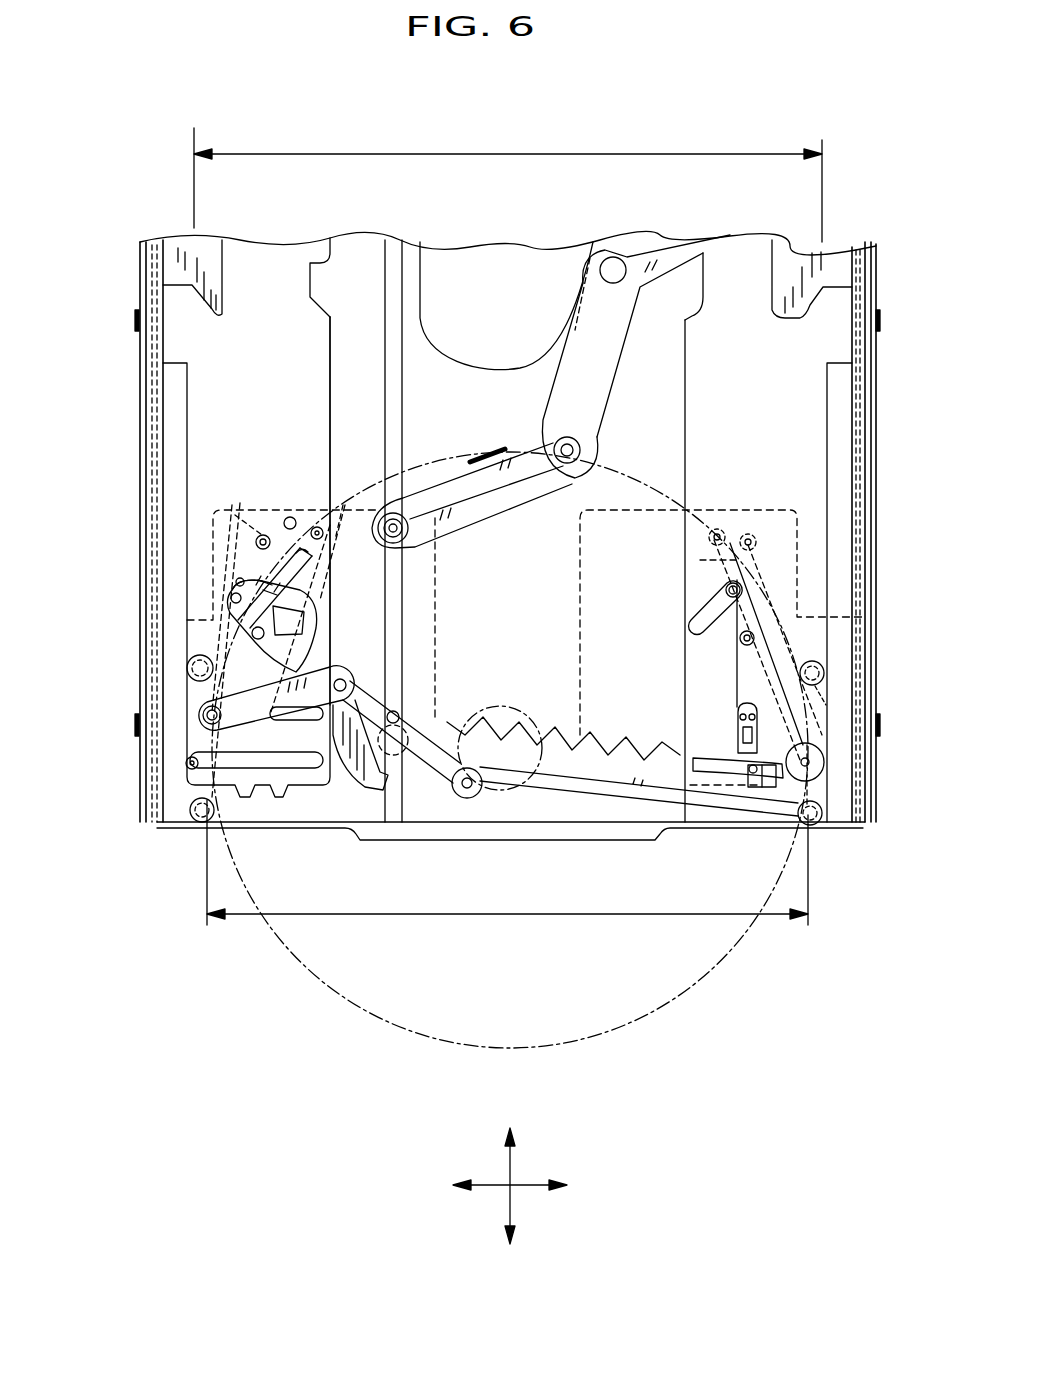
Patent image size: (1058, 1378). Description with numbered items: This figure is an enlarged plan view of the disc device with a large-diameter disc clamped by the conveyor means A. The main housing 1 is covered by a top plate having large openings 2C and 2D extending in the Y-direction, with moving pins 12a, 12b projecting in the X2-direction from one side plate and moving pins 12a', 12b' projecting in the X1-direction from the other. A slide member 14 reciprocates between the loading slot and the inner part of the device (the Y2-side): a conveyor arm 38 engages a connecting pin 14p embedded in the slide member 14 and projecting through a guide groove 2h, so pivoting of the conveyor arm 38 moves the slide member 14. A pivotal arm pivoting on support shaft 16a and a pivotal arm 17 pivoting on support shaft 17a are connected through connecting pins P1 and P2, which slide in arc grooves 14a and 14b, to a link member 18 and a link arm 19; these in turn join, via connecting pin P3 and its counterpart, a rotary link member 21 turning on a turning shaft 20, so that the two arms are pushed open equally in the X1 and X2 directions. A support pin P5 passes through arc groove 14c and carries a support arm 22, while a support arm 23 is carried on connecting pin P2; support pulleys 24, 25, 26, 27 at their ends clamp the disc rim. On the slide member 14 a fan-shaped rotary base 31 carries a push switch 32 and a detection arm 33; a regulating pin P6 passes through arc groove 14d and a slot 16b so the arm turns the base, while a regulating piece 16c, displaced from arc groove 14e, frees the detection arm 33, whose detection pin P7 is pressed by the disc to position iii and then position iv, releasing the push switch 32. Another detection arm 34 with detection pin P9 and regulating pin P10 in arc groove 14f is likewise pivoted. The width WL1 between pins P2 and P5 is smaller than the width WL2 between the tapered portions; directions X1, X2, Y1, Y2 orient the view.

The main housing 1 is at (140, 466).
The opening 2C is at (330, 420).
The opening 2D is at (687, 437).
The guide groove 2h is at (402, 403).
The moving pin 12a is at (913, 730).
The moving pin 12a' is at (89, 730).
The moving pin 12b is at (917, 323).
The moving pin 12b' is at (100, 323).
The slide member 14 is at (580, 578).
The arc groove 14a is at (270, 722).
The arc groove 14b is at (720, 762).
The arc groove 14c is at (300, 768).
The arc groove 14d is at (245, 553).
The arc groove 14e is at (318, 636).
The arc groove 14f is at (697, 642).
The connecting pin 14p is at (400, 505).
The support shaft 16a is at (262, 530).
The slot 16b is at (232, 513).
The regulating piece 16c is at (302, 588).
The pivotal arm 17 is at (745, 582).
The support shaft 17a is at (762, 530).
The link member 18 is at (310, 698).
The link arm 19 is at (600, 782).
The turning shaft 20 is at (425, 702).
The rotary link member 21 is at (417, 765).
The support arm 22 is at (207, 711).
The support arm 23 is at (826, 697).
The support pulley 24 is at (205, 822).
The support pulley 25 is at (190, 662).
The support pulley 26 is at (815, 830).
The support pulley 27 is at (826, 668).
The rotary base 31 is at (300, 652).
The push switch 32 is at (323, 617).
The detection arm 33 is at (312, 556).
The detection arm 34 is at (705, 573).
The conveyor arm 38 is at (598, 422).
The connecting pin P1 is at (208, 714).
The connecting pin P2 is at (826, 762).
The connecting pin P3 is at (400, 703).
The support pin P5 is at (188, 762).
The regulating pin P6 is at (232, 592).
The detection pin P7 is at (298, 530).
The detection pin P9 is at (720, 527).
The regulating pin P10 is at (726, 592).
The conveyor means A is at (256, 452).
The position of detection arm iii is at (345, 505).
The position of detection arm iv is at (288, 517).
The width WL1 is at (507, 876).
The width WL2 is at (508, 182).
The direction X1 is at (440, 1183).
The direction X2 is at (580, 1183).
The direction Y1 is at (510, 1252).
The direction Y2 is at (510, 1108).